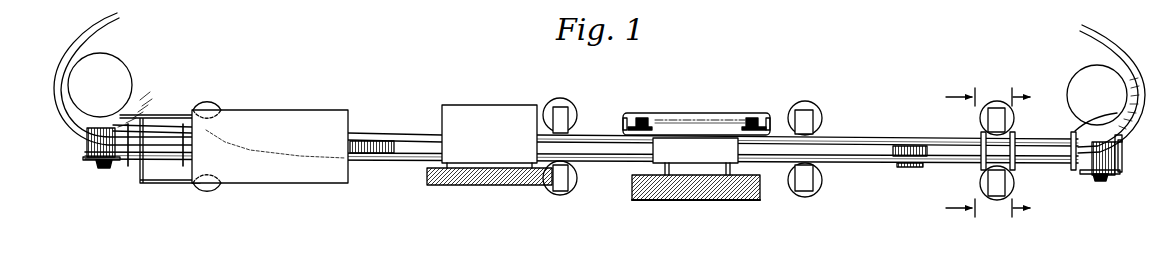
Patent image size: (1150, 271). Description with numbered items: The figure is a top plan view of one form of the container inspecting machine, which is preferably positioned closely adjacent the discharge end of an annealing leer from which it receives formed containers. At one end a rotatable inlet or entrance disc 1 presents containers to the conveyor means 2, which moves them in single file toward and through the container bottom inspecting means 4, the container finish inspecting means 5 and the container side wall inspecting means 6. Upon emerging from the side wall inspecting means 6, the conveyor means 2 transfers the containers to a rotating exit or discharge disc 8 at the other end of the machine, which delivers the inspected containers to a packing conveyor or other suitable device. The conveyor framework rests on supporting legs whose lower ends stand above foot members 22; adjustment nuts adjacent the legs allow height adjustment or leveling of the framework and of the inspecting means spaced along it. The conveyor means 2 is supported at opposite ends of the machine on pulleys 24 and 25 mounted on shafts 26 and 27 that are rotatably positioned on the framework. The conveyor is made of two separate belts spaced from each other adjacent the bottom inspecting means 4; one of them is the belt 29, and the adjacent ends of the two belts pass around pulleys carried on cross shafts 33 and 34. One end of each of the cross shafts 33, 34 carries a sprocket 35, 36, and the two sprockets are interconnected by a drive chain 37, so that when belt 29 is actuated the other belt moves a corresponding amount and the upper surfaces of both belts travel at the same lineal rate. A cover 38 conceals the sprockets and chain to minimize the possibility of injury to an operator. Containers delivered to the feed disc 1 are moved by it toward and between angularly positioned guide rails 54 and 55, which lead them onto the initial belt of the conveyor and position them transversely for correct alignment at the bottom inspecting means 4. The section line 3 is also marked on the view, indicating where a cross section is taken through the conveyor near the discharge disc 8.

The inlet disc 1 is at (1066, 60).
The conveyor means 2 is at (369, 133).
The section line 3- 3 is at (1029, 154).
The container bottom inspecting means 4 is at (775, 154).
The container finish inspecting means 5 is at (481, 102).
The container side wall inspecting means 6 is at (274, 107).
The discharge disc 8 is at (140, 53).
The foot members 22 is at (560, 193).
The pulley 24 is at (1120, 172).
The pulley 25 is at (88, 163).
The shaft 26 is at (914, 150).
The shaft 27 is at (103, 168).
The conveyor belt 29 is at (399, 150).
The cross shaft 33 is at (764, 115).
The cross shaft 34 is at (638, 115).
The sprocket 35 is at (749, 114).
The sprocket 36 is at (626, 122).
The drive chain 37 is at (691, 121).
The cover 38 is at (657, 113).
The guide rail 54 is at (1089, 129).
The guide rail 55 is at (1117, 145).